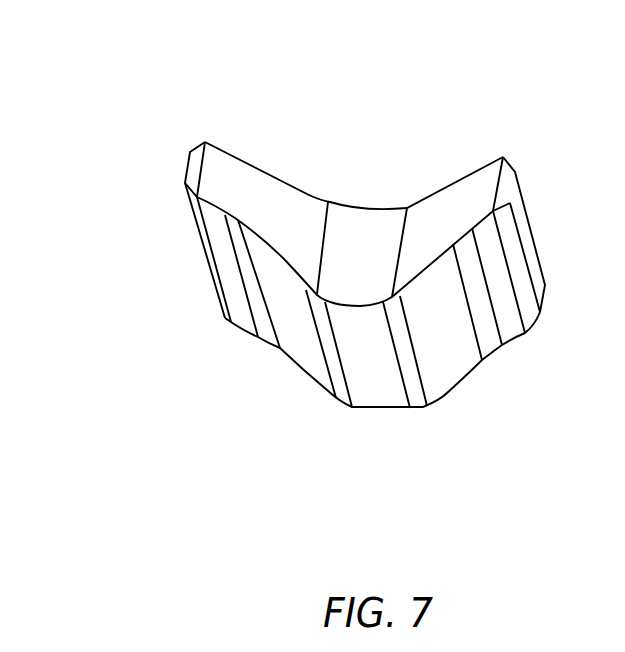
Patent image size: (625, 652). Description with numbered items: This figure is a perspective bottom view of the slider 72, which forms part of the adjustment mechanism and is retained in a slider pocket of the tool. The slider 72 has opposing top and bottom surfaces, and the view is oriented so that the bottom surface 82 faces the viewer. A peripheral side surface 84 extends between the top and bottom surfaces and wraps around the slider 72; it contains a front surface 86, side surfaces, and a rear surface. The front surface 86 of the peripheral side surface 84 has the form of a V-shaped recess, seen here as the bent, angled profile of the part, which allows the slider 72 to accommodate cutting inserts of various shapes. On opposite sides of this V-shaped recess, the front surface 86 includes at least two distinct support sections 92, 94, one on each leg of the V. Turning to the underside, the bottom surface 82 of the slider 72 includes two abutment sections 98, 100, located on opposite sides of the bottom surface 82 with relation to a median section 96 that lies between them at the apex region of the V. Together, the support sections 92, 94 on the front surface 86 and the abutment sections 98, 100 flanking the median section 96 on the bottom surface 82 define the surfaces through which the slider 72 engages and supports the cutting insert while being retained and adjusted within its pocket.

The slider 72 is at (142, 84).
The bottom surface 82 is at (380, 343).
The peripheral side surface 84 is at (527, 232).
The front surface 86 is at (302, 213).
The support section 92 is at (225, 177).
The support section 94 is at (435, 210).
The median section 96 is at (390, 383).
The abutment section 98 is at (453, 343).
The abutment section 100 is at (302, 342).